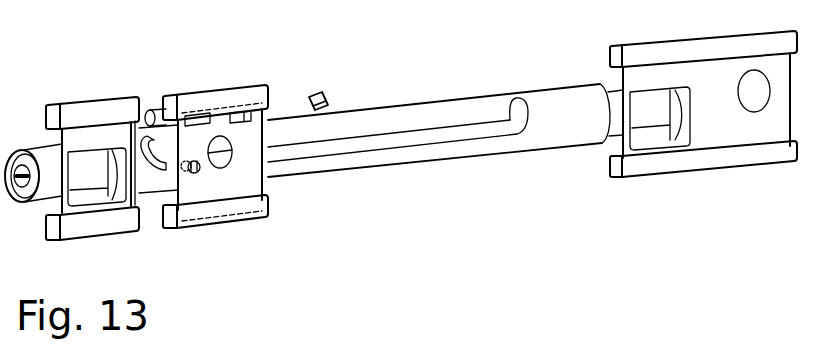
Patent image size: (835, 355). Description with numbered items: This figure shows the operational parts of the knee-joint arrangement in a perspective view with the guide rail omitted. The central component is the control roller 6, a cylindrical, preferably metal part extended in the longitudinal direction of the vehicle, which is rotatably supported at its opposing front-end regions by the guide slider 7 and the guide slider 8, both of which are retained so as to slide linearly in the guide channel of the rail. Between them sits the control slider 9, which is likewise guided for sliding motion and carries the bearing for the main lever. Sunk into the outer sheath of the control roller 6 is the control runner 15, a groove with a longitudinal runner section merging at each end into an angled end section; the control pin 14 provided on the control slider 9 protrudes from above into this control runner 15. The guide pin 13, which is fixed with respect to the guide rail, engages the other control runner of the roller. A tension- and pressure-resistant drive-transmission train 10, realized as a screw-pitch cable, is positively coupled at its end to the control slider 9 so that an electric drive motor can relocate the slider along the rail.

The control roller 6 is at (451, 98).
The guide slider 7 is at (89, 99).
The guide slider 8 is at (756, 122).
The control slider 9 is at (242, 84).
The drive-transmission train 10 is at (150, 110).
The guide pin 13 is at (320, 90).
The control pin 14 is at (200, 172).
The control runner 15 is at (406, 140).